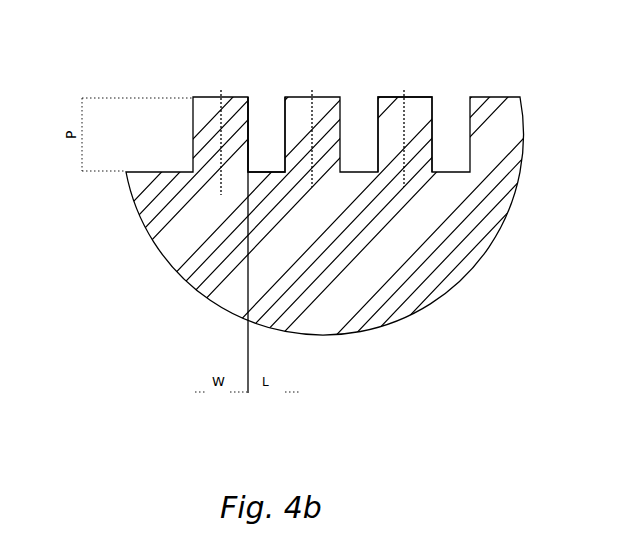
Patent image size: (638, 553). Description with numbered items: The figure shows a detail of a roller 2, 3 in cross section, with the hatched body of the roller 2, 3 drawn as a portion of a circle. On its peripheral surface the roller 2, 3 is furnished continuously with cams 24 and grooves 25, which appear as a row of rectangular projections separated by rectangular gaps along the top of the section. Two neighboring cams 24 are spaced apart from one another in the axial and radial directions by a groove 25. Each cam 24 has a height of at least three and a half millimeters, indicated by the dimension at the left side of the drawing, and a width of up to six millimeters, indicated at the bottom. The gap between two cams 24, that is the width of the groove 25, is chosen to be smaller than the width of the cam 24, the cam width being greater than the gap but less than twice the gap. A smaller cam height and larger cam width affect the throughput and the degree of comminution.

The roller 2 is at (313, 215).
The roller 3 is at (443, 292).
The cam 24 is at (413, 96).
The groove 25 is at (266, 108).